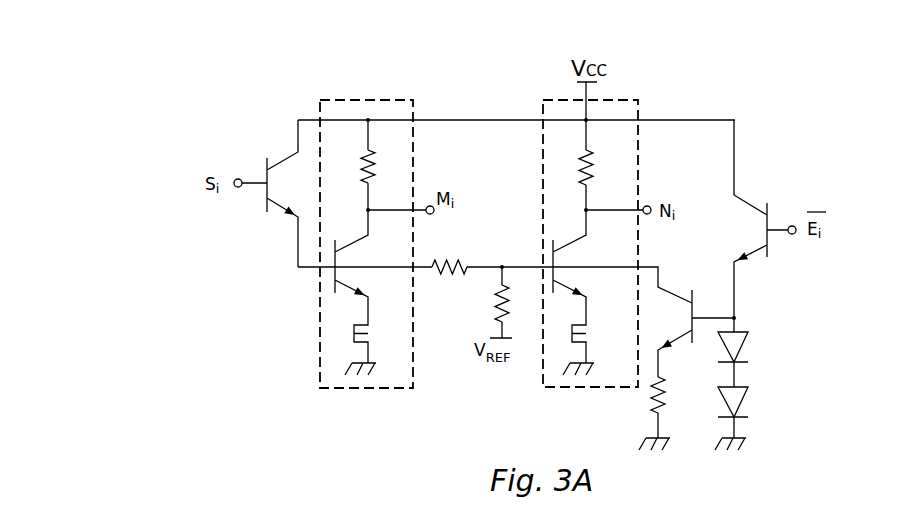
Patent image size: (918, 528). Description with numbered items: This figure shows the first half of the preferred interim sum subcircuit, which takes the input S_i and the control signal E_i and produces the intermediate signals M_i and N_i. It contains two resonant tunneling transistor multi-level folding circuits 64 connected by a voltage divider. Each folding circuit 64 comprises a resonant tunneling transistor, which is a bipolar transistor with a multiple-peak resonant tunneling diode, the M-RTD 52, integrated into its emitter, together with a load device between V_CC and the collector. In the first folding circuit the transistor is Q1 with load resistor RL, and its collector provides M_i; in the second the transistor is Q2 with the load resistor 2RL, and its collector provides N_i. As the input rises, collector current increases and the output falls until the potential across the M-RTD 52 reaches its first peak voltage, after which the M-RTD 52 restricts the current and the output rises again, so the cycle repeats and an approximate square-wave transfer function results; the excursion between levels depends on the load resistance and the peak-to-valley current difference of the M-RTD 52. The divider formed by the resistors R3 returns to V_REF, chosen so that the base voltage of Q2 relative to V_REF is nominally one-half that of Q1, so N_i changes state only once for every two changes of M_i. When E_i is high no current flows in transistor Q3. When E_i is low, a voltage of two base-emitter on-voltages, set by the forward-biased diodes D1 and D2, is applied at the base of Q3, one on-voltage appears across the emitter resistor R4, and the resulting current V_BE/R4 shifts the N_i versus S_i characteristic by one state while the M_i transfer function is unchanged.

The multi-level folding circuit 64 is at (337, 83).
The M-RTD 52 is at (345, 345).
The transistor Q1 is at (365, 264).
The transistor Q2 is at (581, 264).
The transistor Q3 is at (690, 333).
The resistor R3 is at (472, 286).
The resistor R4 is at (666, 413).
The load resistor RL is at (393, 165).
The load resistor 2RL is at (611, 178).
The diode D1 is at (750, 359).
The diode D2 is at (748, 418).